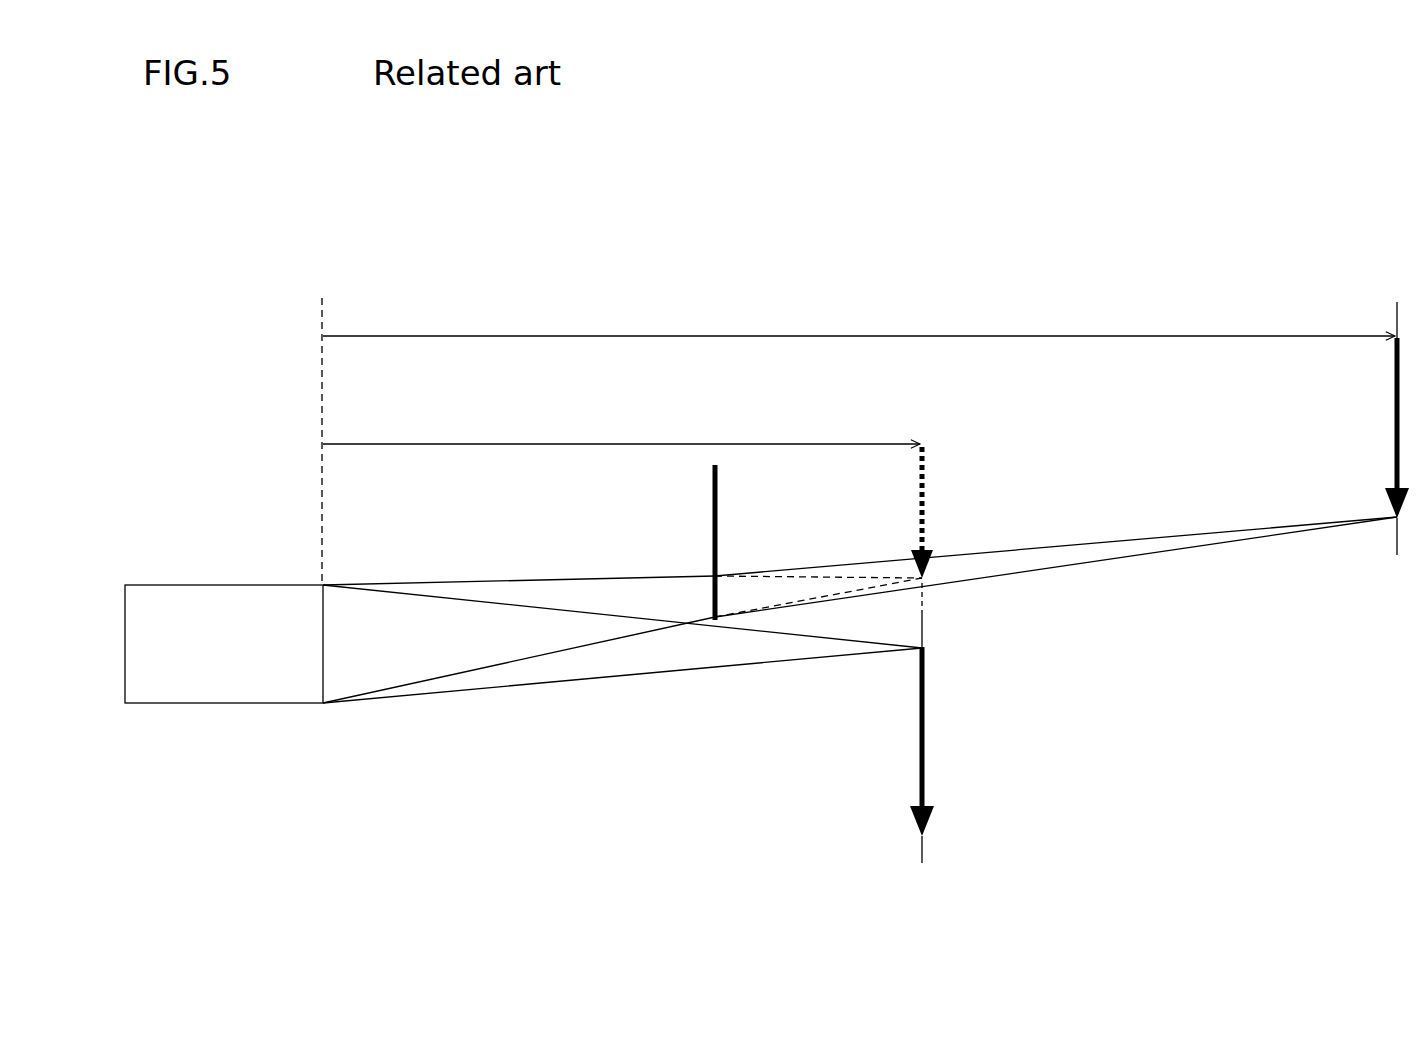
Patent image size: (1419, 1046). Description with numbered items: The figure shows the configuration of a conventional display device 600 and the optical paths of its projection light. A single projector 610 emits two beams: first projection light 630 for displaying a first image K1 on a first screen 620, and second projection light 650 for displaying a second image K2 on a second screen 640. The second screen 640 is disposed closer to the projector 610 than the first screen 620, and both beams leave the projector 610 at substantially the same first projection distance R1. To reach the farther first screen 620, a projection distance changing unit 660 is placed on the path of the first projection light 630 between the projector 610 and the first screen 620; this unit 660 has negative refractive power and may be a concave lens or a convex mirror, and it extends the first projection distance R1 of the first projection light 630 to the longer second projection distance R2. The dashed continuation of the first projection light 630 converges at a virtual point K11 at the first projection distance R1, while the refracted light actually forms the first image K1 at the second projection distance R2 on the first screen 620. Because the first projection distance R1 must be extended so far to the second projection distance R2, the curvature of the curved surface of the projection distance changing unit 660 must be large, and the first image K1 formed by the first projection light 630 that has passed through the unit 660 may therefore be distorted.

The optical system (related art) 600 is at (268, 466).
The projector 610 is at (256, 706).
The first screen 620 is at (1395, 545).
The first projection light 630 is at (1134, 537).
The second screen 640 is at (925, 850).
The second projection light 650 is at (802, 660).
The projection distance changing unit 660 is at (712, 525).
The first image K1 is at (1395, 465).
The second image K2 is at (925, 737).
The virtual focal point K11 is at (925, 507).
The first projection distance R1 is at (621, 426).
The second projection distance R2 is at (859, 318).